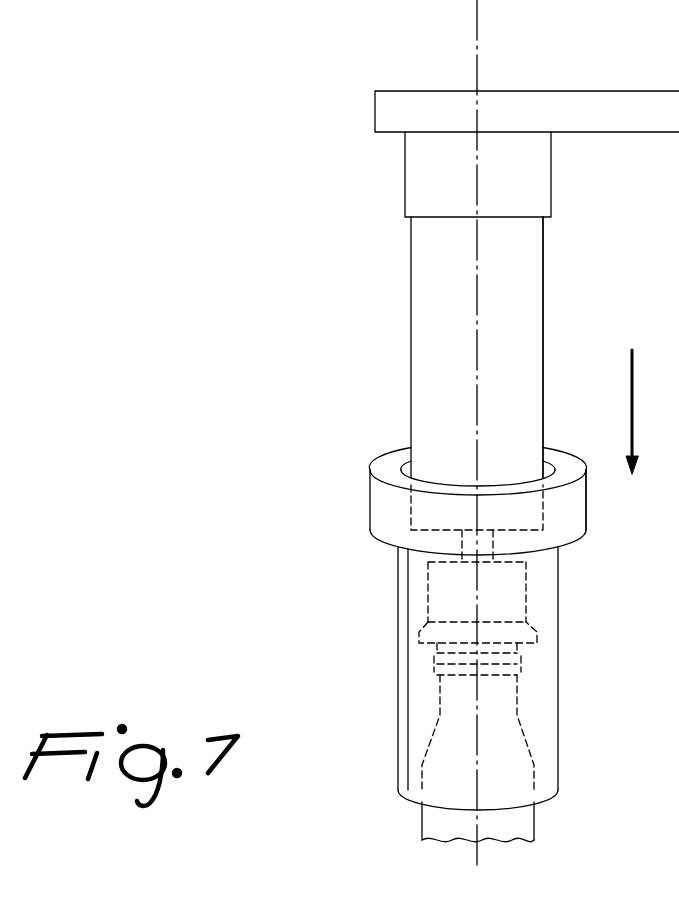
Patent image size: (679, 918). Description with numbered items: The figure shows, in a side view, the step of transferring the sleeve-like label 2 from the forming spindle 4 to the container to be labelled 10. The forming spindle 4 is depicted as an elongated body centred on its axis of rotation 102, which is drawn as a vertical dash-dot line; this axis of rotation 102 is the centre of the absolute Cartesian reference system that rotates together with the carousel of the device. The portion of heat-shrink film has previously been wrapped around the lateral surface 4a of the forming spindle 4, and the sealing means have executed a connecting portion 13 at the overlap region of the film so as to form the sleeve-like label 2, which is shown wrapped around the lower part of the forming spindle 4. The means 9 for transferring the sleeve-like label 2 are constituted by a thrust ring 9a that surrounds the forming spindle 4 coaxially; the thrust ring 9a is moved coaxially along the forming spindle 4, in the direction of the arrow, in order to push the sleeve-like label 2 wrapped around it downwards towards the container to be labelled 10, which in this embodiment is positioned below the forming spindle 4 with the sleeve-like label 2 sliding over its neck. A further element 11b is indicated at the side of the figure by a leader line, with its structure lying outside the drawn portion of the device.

The axis of rotation 102 is at (480, 27).
The forming spindle 4 is at (514, 311).
The lateral surface 4a is at (507, 257).
The means for transferring 9 is at (396, 517).
The thrust ring 9a is at (560, 510).
The sleeve-like label 2 is at (537, 710).
The connecting portion 13 is at (408, 762).
The container to be labelled 10 is at (515, 820).
The guide element 11b is at (0, 370).